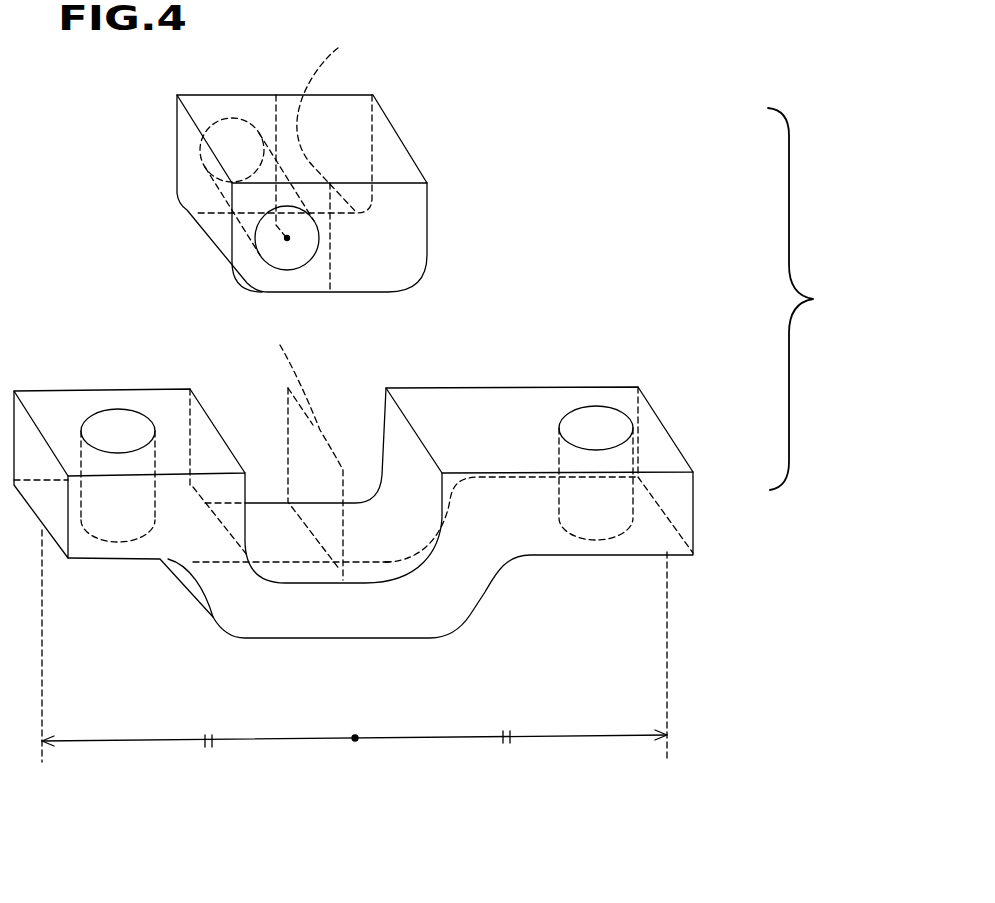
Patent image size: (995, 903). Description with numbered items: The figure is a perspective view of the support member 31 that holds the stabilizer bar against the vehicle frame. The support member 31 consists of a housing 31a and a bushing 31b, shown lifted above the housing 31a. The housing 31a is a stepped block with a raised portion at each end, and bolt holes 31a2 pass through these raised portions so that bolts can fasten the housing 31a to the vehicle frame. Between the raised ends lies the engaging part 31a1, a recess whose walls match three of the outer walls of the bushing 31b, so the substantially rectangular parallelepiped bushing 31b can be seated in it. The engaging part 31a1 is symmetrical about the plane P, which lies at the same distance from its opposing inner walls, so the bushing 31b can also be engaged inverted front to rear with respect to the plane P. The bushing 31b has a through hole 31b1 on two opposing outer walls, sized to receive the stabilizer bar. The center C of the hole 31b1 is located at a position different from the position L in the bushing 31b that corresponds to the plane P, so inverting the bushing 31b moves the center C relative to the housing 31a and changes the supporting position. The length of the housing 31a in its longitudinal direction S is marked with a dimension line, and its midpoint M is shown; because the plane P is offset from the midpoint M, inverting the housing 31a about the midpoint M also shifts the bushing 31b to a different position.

The support member 31 is at (811, 299).
The housing 31a is at (650, 410).
The engaging part 31a1 is at (362, 392).
The bolt holes 31a2 is at (100, 425).
The bushing 31b is at (393, 133).
The through hole 31b1 is at (267, 236).
The center of hole C is at (287, 238).
The position corresponding to plane P L is at (332, 120).
The plane P is at (293, 453).
The longitudinal direction S is at (354, 663).
The midpoint M is at (357, 765).